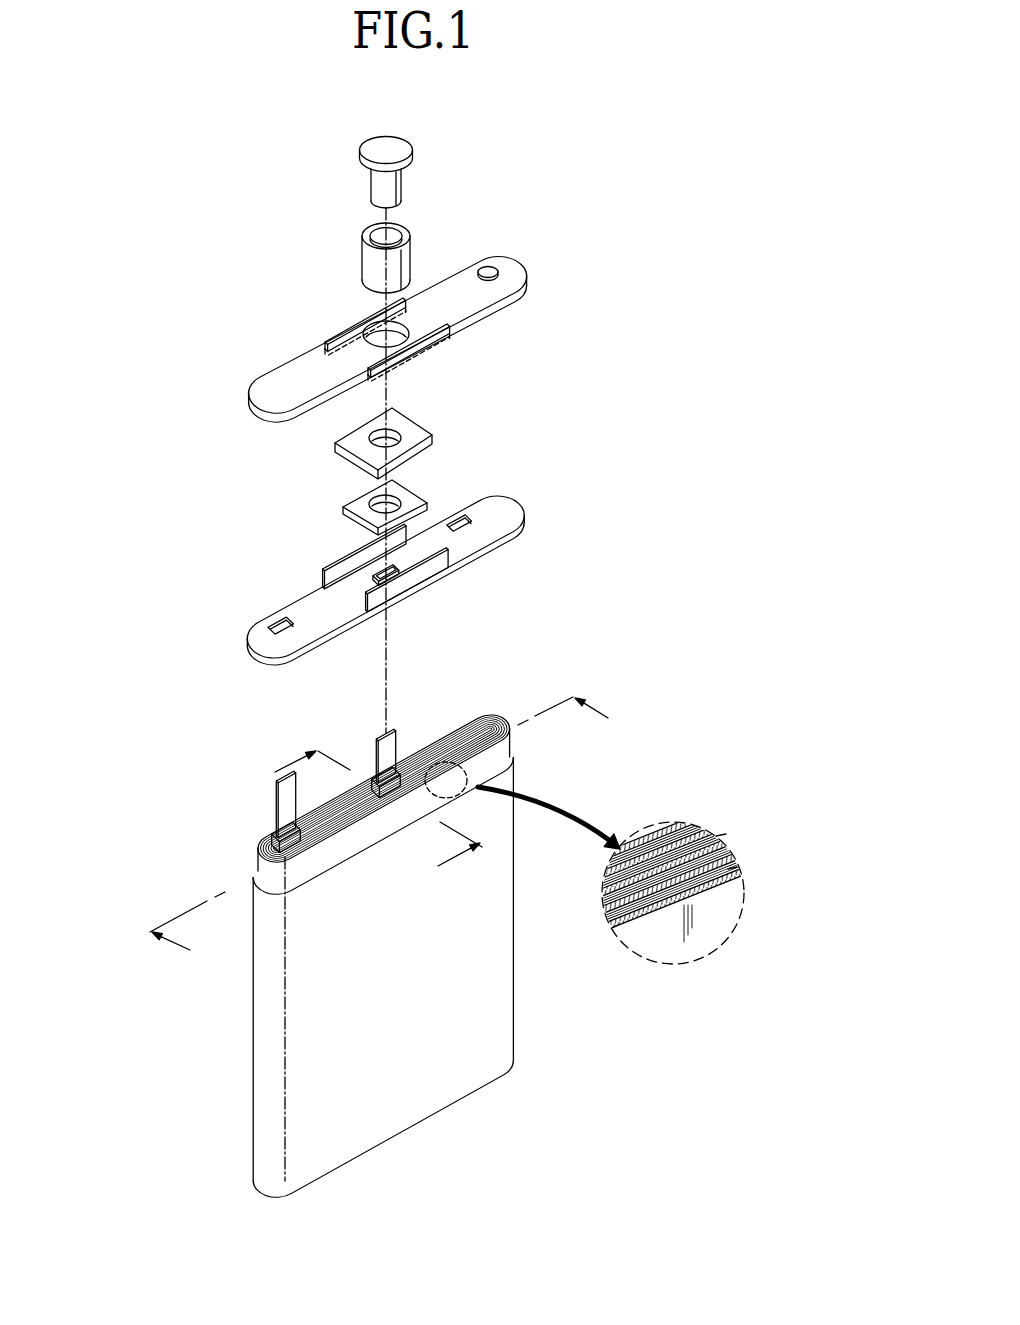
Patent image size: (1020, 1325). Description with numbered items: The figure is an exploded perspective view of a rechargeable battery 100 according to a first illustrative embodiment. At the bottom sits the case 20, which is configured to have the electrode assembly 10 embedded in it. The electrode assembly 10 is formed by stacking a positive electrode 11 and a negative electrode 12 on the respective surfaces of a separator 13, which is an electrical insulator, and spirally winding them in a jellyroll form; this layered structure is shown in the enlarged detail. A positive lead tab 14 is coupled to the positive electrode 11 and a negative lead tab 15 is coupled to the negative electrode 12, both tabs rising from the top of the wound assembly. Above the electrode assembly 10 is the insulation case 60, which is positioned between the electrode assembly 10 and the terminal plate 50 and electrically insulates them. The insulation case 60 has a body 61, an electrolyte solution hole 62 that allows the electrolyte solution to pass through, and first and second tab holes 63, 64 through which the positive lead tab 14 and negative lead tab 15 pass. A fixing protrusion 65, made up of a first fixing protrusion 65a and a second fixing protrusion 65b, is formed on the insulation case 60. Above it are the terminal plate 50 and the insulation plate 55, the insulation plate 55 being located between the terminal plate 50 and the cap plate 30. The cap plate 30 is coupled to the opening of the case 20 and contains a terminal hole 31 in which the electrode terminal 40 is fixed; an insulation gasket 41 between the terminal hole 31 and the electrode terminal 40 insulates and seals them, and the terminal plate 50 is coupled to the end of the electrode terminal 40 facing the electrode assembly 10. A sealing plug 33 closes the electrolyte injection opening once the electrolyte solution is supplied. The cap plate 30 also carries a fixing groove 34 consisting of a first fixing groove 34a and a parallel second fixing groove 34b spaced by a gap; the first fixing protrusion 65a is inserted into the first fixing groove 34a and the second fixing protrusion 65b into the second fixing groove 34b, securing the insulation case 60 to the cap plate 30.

The rechargeable battery 100 is at (599, 180).
The electrode assembly 10 is at (494, 710).
The positive electrode 11 is at (725, 834).
The negative electrode 12 is at (736, 867).
The separator 13 is at (612, 928).
The positive lead tab 14 is at (274, 797).
The negative lead tab 15 is at (392, 749).
The case 20 is at (372, 1112).
The cap plate 30 is at (290, 385).
The terminal hole 31 is at (458, 319).
The sealing plug 33 is at (490, 267).
The fixing groove 34 is at (338, 266).
The first fixing groove 34a is at (354, 340).
The second fixing groove 34b is at (367, 320).
The electrode terminal 40 is at (398, 147).
The insulation gasket 41 is at (405, 225).
The terminal plate 50 is at (405, 497).
The insulation plate 55 is at (413, 422).
The insulation case 60 is at (531, 501).
The body 61 is at (497, 538).
The electrolyte solution hole 62 is at (462, 515).
The first tab hole 63 is at (377, 575).
The second tab hole 64 is at (275, 618).
The fixing protrusion 65 is at (425, 676).
The first fixing protrusion 65a is at (397, 596).
The second fixing protrusion 65b is at (340, 576).